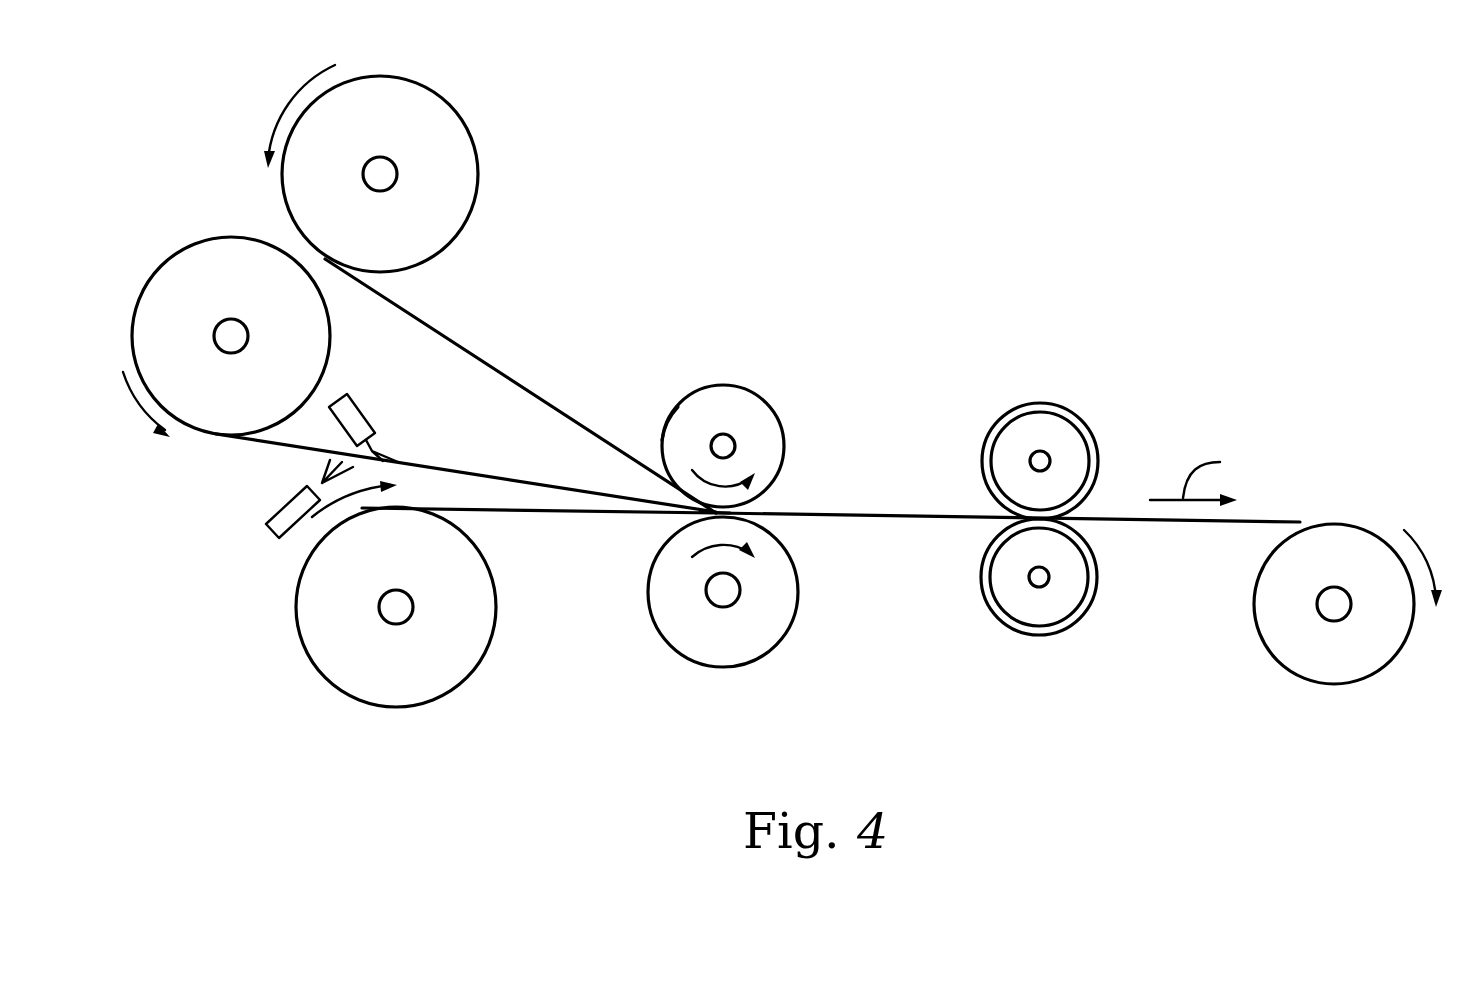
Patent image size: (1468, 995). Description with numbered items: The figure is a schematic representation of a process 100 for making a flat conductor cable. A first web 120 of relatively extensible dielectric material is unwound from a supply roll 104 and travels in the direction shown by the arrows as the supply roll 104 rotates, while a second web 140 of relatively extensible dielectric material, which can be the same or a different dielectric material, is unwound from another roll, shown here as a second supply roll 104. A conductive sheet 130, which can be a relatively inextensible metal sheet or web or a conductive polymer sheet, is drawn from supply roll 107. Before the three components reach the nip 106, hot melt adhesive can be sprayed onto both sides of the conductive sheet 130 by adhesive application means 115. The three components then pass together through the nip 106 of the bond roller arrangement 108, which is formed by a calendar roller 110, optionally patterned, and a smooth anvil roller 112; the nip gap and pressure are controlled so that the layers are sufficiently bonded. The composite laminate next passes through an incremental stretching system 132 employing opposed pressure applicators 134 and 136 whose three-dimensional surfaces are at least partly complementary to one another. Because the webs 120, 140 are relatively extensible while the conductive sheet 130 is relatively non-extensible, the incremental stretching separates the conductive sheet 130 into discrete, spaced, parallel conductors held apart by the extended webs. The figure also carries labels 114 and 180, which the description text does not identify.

The process 100 is at (1237, 397).
The supply roll 104 is at (438, 125).
The nip 106 is at (672, 525).
The supply roll 107 is at (213, 258).
The bond roller arrangement 108 is at (705, 515).
The calendar roller 110 is at (718, 397).
The smooth anvil roller 112 is at (752, 648).
The surface of nip roll 114 is at (670, 415).
The adhesive application means 115 is at (352, 408).
The first web 120 is at (452, 338).
The conductive sheet 130 is at (305, 453).
The incremental stretching system 132 is at (1022, 528).
The pressure applicator 134 is at (1066, 430).
The pressure applicator 136 is at (1064, 606).
The second web 140 is at (507, 511).
The take-up roll 180 is at (1353, 537).